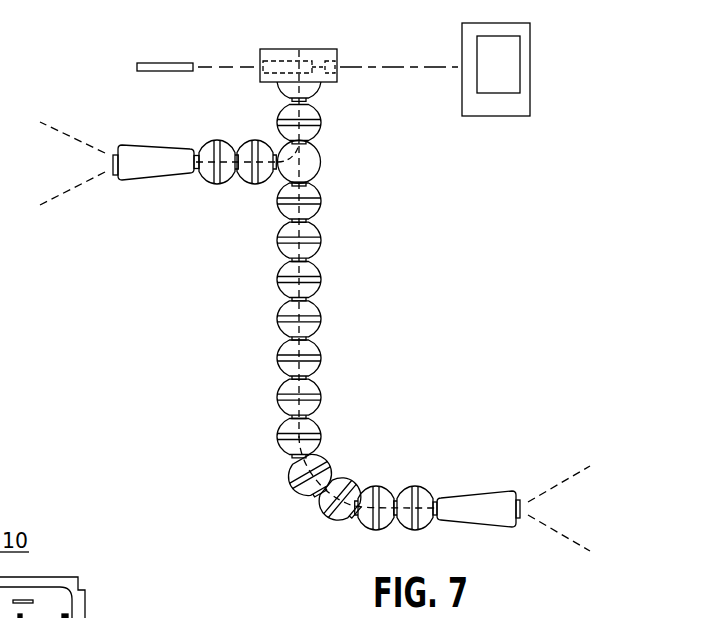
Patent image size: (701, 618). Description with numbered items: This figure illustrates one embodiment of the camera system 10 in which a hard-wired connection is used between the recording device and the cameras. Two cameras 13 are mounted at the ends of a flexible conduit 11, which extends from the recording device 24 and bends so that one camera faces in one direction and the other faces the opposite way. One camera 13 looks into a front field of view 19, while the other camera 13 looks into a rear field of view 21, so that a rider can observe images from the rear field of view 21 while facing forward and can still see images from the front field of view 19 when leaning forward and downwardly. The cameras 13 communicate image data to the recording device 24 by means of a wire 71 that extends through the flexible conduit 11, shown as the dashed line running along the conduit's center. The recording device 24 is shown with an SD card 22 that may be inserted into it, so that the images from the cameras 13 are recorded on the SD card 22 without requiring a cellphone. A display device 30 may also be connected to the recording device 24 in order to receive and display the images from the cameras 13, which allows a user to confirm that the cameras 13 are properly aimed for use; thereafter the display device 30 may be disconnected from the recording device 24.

The imaging system 10 is at (288, 20).
The flexible conduit 11 is at (312, 272).
The camera 13 is at (152, 175).
The front field of view 19 is at (47, 172).
The rear field of view 21 is at (607, 518).
The SD card 22 is at (157, 63).
The recording device 24 is at (334, 50).
The display device 30 is at (530, 87).
The wire 71 is at (304, 343).